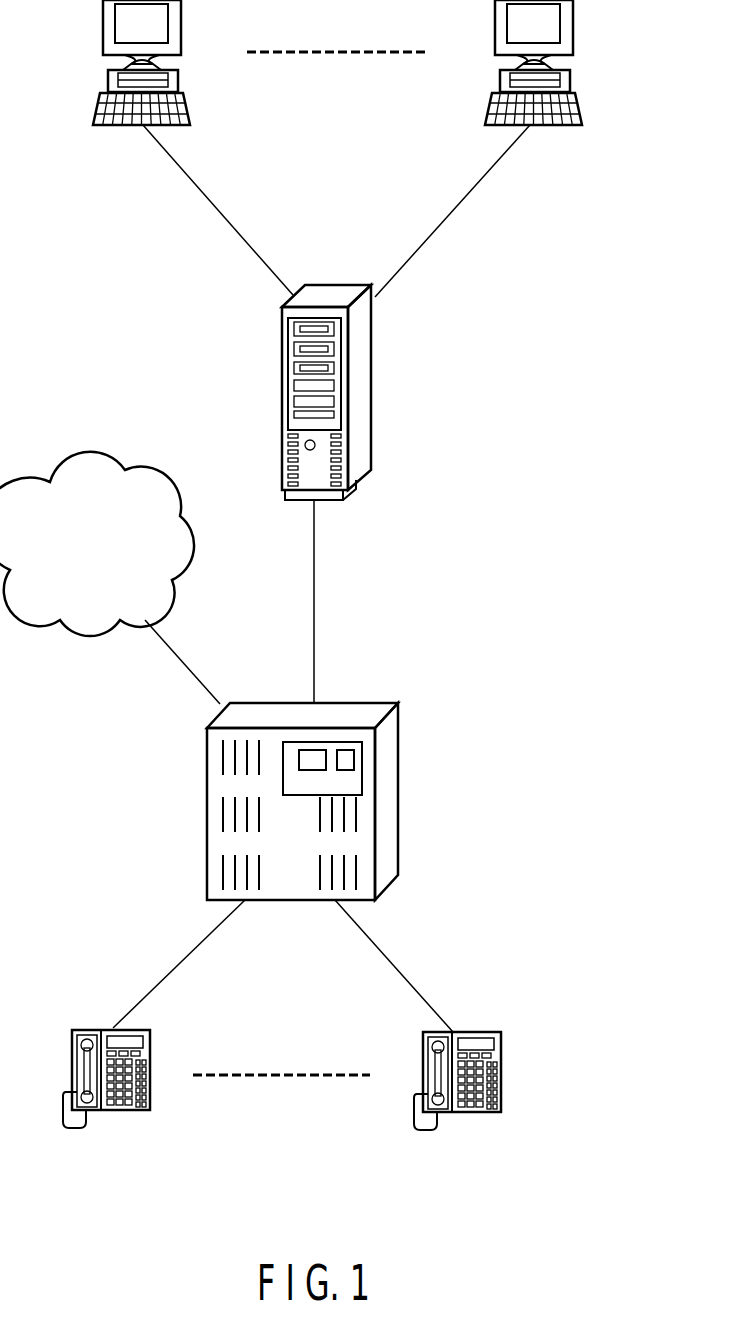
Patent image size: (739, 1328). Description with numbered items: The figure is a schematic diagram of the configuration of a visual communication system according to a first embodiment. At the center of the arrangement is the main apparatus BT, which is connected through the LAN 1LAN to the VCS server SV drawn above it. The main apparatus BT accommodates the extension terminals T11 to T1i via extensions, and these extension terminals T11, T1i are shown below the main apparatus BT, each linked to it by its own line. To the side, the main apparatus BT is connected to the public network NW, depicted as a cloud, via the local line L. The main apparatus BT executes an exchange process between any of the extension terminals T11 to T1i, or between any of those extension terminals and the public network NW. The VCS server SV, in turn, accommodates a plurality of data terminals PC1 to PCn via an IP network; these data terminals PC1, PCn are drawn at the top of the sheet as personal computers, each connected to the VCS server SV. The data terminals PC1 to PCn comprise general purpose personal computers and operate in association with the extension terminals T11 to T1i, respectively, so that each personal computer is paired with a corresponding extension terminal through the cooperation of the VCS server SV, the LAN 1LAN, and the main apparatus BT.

The data terminal PC1 is at (103, 22).
The data terminal PCn is at (571, 25).
The VCS server SV is at (371, 372).
The public network NW is at (97, 462).
The LAN 1LAN is at (314, 580).
The local line L is at (196, 672).
The main apparatus BT is at (400, 795).
The extension terminal T11 is at (113, 1110).
The extension terminal T1i is at (463, 1112).